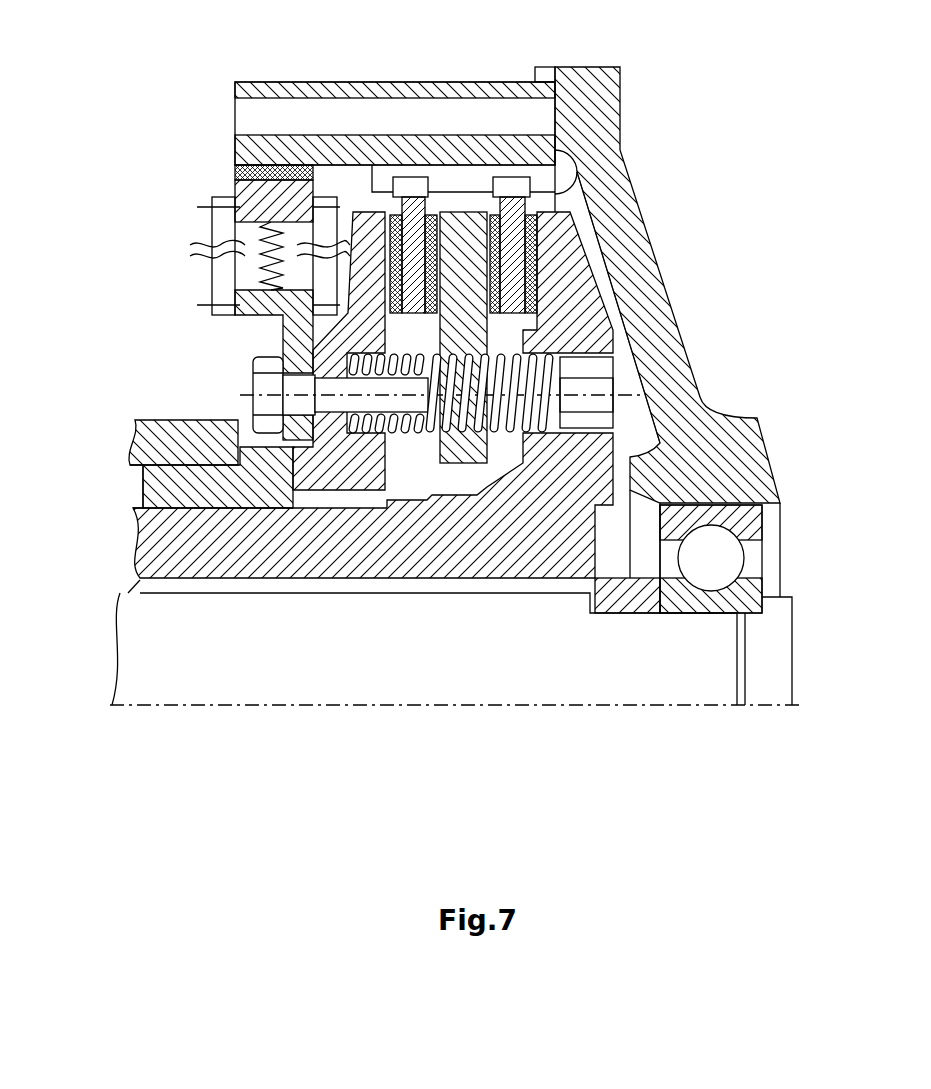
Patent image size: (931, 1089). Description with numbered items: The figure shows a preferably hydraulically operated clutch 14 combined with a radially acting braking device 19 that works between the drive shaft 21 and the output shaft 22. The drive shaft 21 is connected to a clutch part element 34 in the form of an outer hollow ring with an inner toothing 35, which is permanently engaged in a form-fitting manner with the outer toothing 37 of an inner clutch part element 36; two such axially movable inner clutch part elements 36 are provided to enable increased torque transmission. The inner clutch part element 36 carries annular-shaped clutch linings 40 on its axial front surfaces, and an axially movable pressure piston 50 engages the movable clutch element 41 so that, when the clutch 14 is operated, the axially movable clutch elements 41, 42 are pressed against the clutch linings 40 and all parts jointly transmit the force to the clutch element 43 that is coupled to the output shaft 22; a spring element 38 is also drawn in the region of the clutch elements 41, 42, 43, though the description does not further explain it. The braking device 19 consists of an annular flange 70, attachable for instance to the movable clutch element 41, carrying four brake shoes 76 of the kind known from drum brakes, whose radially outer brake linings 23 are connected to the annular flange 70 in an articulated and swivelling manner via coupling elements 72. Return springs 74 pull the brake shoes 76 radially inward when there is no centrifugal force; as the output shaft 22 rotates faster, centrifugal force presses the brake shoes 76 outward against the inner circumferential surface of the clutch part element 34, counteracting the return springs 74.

The clutch 14 is at (730, 211).
The braking device 19 is at (160, 211).
The drive shaft 21 is at (717, 443).
The output shaft 22 is at (170, 626).
The brake linings 23 is at (233, 187).
The clutch part element 34 is at (437, 82).
The inner toothing 35 is at (448, 182).
The inner clutch part element 36 is at (443, 205).
The outer toothing 37 is at (580, 160).
The compression spring 38 is at (527, 383).
The clutch linings 40 is at (545, 255).
The movable clutch element 41 is at (372, 223).
The clutch element 42 is at (463, 322).
The clutch element 43 is at (597, 290).
The pressure piston 50 is at (183, 488).
The annular flange 70 is at (297, 335).
The coupling elements 72 is at (220, 283).
The return springs 74 is at (257, 224).
The brake shoes 76 is at (233, 178).